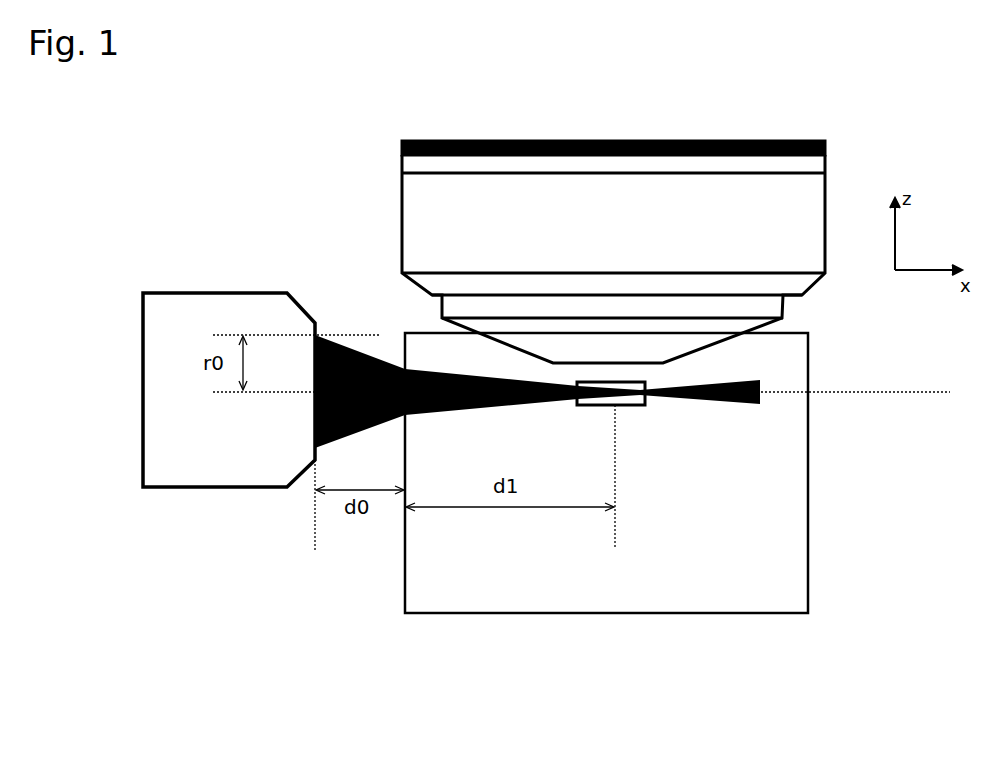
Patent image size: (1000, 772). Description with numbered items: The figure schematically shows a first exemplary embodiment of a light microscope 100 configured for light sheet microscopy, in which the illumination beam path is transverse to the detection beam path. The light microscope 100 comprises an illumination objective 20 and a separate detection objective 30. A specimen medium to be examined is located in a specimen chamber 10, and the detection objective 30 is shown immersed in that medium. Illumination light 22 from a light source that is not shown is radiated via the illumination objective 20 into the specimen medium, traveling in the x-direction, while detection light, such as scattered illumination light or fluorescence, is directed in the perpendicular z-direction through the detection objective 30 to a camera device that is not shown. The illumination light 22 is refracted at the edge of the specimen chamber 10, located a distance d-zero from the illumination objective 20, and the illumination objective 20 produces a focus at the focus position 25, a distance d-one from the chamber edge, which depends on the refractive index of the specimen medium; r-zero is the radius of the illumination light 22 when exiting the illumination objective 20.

The specimen chamber 10 is at (808, 492).
The illumination objective 20 is at (200, 489).
The illumination light 22 is at (453, 410).
The focus position 25 is at (617, 395).
The detection objective 30 is at (428, 205).
The light microscope 100 is at (814, 661).